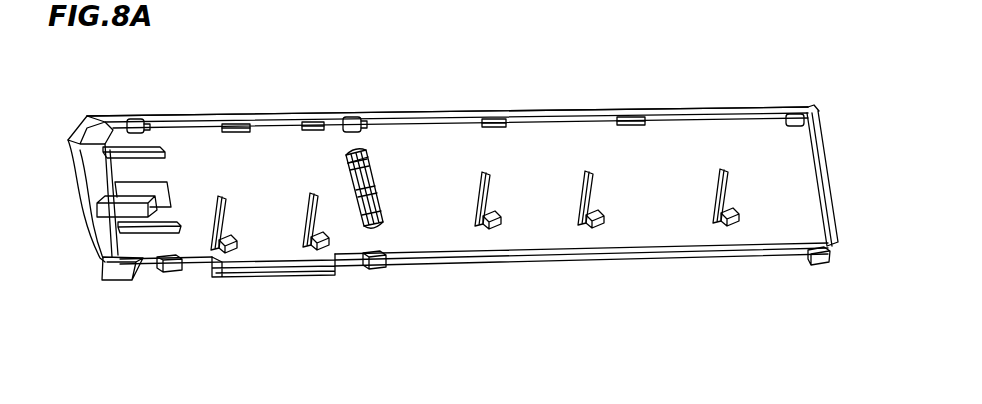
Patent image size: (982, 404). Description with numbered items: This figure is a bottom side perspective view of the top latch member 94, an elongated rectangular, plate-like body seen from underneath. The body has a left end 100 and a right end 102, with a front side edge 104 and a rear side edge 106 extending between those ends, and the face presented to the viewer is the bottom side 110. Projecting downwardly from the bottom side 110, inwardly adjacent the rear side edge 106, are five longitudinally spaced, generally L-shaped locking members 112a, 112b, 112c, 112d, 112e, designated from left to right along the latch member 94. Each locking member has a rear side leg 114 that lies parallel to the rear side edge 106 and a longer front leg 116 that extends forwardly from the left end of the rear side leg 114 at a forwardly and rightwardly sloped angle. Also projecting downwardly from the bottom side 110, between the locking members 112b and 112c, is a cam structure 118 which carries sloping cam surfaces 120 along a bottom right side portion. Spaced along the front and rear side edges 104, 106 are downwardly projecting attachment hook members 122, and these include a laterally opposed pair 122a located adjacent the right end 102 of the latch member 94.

The top latch member 94 is at (452, 116).
The left end 100 is at (80, 192).
The right end 102 is at (817, 165).
The front side edge 104 is at (280, 118).
The rear side edge 106 is at (237, 277).
The bottom side 110 is at (683, 164).
The locking member 112a is at (226, 188).
The locking member 112b is at (336, 238).
The locking member 112c is at (500, 179).
The locking member 112d is at (609, 228).
The locking member 112e is at (743, 233).
The rear side leg 114 is at (230, 235).
The front leg 116 is at (227, 210).
The cam structure 118 is at (372, 137).
The sloping cam surfaces 120 is at (368, 157).
The attachment hook members 122 is at (134, 120).
The laterally opposed pair of attachment hook members 122a is at (801, 120).